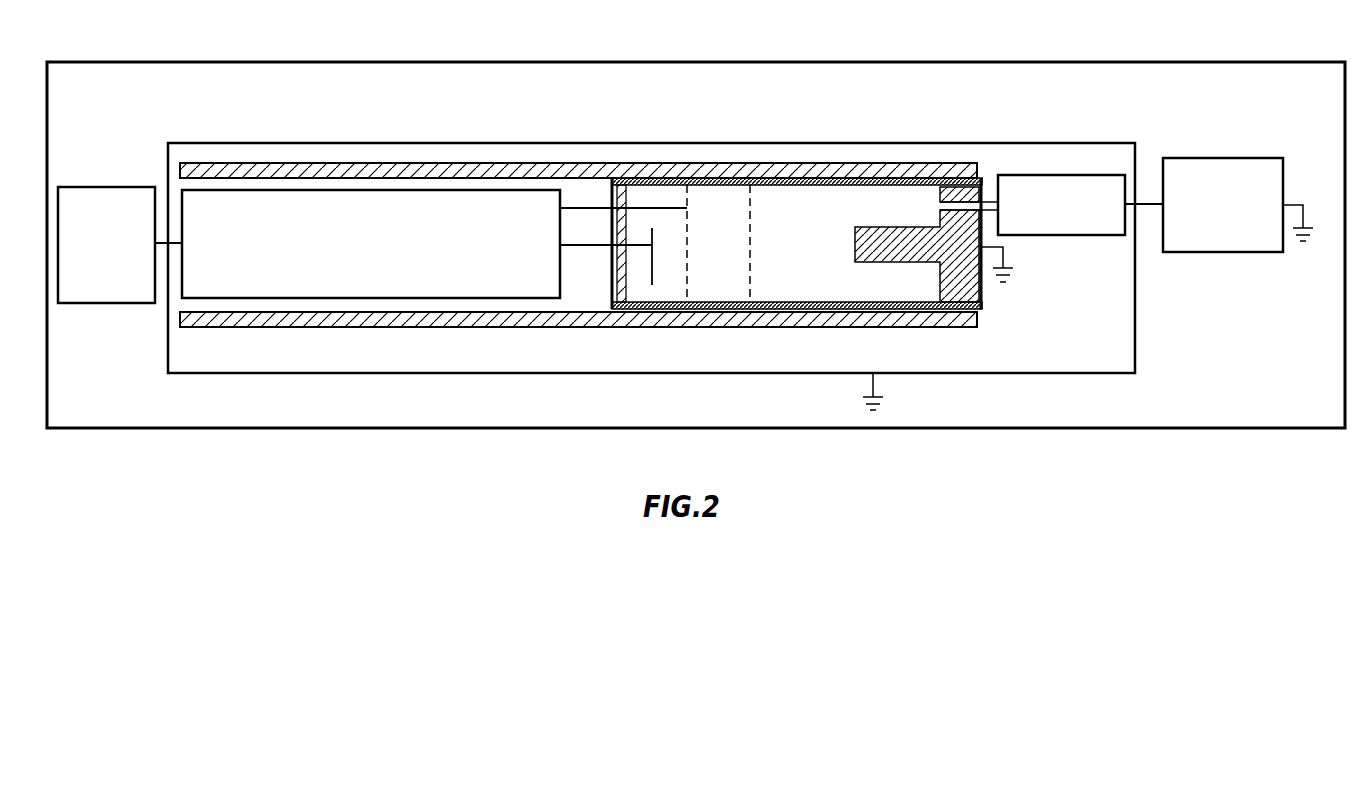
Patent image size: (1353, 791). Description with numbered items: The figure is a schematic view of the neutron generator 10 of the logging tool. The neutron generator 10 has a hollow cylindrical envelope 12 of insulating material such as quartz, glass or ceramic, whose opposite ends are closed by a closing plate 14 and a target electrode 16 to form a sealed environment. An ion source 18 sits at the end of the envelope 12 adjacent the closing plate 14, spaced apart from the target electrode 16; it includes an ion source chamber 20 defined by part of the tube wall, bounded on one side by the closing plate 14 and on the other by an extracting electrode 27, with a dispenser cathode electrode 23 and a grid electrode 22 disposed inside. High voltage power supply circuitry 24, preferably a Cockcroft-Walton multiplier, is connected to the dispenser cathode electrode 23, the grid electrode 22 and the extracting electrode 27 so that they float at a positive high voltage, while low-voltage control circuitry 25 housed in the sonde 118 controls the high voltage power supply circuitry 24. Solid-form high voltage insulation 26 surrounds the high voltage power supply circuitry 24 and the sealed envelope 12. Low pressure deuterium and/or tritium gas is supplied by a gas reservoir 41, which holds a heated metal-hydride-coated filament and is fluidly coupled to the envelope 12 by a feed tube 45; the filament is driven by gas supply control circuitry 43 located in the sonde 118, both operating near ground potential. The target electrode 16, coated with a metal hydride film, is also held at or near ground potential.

The sonde 118 is at (402, 62).
The neutron generator 10 is at (215, 142).
The solid-form high voltage insulation 26 is at (330, 163).
The control circuitry 25 is at (108, 187).
The high voltage power supply circuitry 24 is at (384, 286).
The hollow cylindrical envelope 12 is at (828, 185).
The closing plate 14 is at (621, 265).
The grid electrode 22 is at (687, 220).
The ion source chamber 20 is at (672, 240).
The dispenser cathode electrode 23 is at (653, 278).
The ion source 18 is at (736, 289).
The extracting electrode 27 is at (750, 225).
The target electrode 16 is at (855, 248).
The feed tube 45 is at (992, 197).
The gas reservoir 41 is at (1053, 175).
The gas supply control circuitry 43 is at (1232, 158).